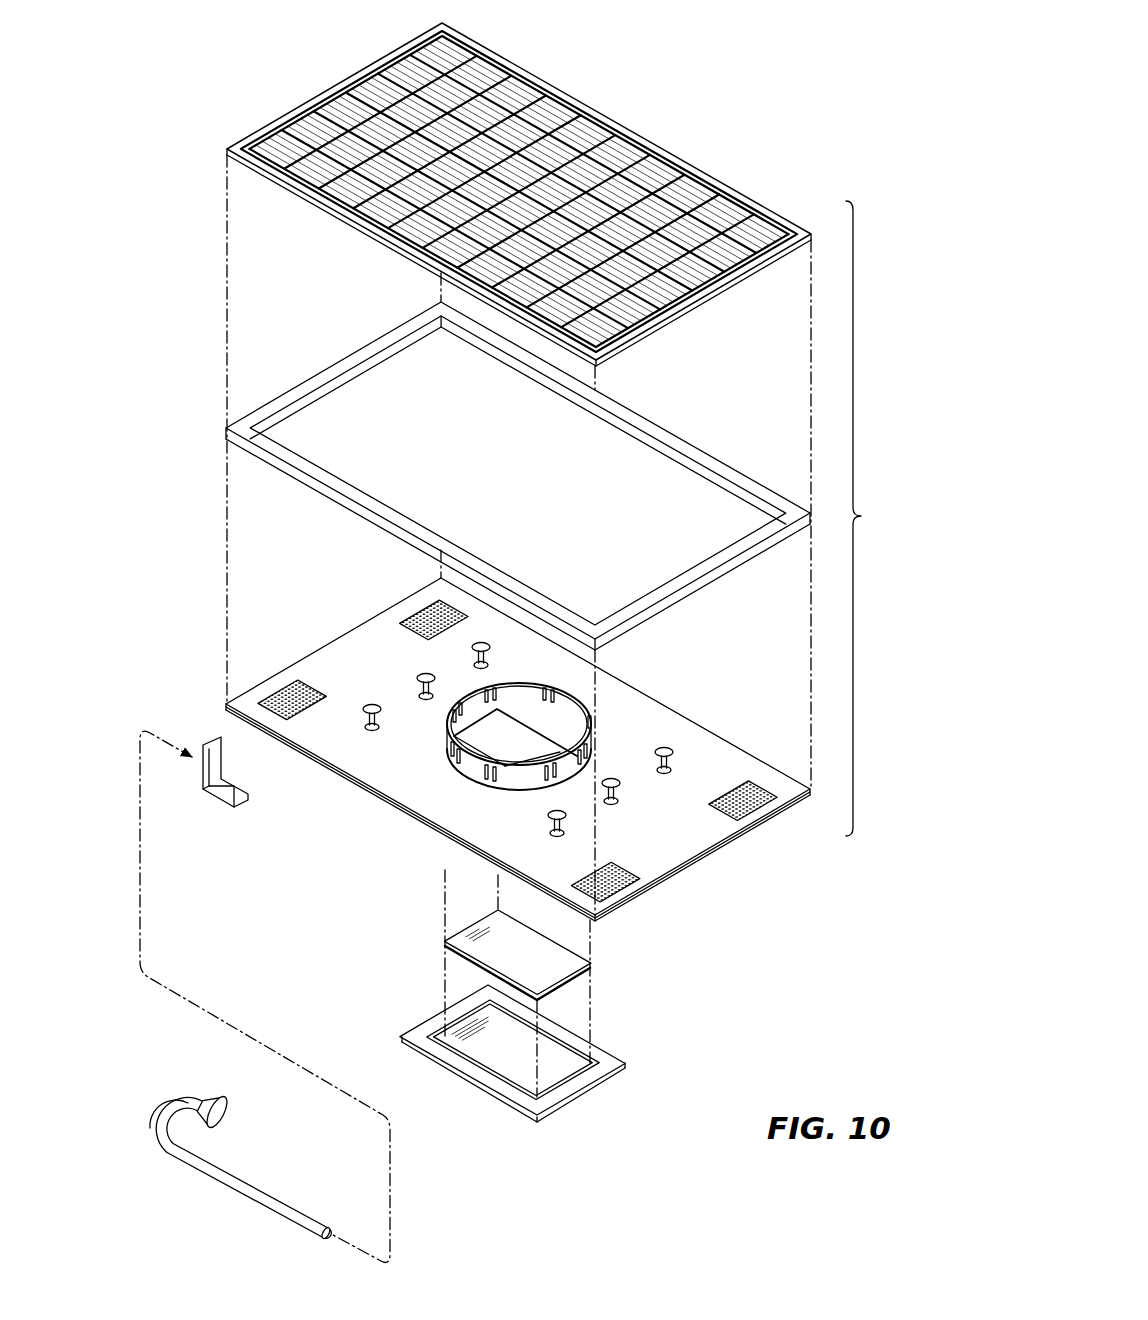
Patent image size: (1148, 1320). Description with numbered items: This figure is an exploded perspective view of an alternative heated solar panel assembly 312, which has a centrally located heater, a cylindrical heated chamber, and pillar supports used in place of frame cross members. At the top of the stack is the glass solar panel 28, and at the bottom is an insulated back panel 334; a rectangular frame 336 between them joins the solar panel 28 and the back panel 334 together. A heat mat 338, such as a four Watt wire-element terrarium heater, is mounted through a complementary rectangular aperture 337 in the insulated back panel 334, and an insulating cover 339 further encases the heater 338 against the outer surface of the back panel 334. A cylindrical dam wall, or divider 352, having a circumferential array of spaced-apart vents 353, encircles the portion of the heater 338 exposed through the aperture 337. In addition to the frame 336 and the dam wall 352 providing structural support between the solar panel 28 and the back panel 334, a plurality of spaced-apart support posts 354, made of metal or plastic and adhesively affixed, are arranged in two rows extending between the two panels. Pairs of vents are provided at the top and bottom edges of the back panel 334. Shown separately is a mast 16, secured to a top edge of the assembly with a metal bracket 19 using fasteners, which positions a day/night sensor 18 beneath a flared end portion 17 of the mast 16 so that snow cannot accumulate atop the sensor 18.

The mast 16 is at (158, 1106).
The flared end portion 17 is at (216, 1097).
The day/night sensor 18 is at (225, 1118).
The metal bracket 19 is at (203, 775).
The solar panel 28 is at (718, 306).
The solar panel assembly 312 is at (876, 518).
The insulated back panel 334 is at (710, 869).
The frame 336 is at (718, 584).
The rectangular aperture 337 is at (530, 745).
The heat mat 338 is at (572, 988).
The insulating cover 339 is at (582, 1097).
The dam wall 352 is at (521, 789).
The vents 353 is at (458, 762).
The support posts 354 is at (614, 780).